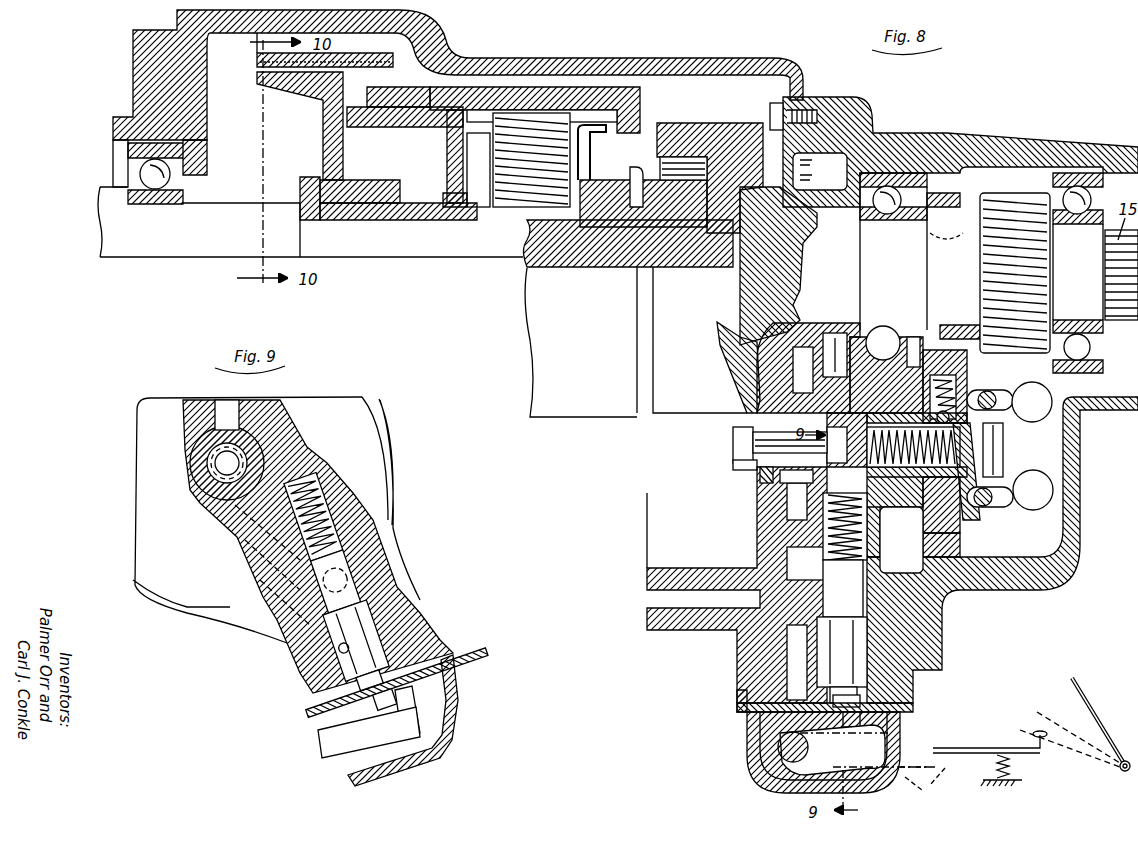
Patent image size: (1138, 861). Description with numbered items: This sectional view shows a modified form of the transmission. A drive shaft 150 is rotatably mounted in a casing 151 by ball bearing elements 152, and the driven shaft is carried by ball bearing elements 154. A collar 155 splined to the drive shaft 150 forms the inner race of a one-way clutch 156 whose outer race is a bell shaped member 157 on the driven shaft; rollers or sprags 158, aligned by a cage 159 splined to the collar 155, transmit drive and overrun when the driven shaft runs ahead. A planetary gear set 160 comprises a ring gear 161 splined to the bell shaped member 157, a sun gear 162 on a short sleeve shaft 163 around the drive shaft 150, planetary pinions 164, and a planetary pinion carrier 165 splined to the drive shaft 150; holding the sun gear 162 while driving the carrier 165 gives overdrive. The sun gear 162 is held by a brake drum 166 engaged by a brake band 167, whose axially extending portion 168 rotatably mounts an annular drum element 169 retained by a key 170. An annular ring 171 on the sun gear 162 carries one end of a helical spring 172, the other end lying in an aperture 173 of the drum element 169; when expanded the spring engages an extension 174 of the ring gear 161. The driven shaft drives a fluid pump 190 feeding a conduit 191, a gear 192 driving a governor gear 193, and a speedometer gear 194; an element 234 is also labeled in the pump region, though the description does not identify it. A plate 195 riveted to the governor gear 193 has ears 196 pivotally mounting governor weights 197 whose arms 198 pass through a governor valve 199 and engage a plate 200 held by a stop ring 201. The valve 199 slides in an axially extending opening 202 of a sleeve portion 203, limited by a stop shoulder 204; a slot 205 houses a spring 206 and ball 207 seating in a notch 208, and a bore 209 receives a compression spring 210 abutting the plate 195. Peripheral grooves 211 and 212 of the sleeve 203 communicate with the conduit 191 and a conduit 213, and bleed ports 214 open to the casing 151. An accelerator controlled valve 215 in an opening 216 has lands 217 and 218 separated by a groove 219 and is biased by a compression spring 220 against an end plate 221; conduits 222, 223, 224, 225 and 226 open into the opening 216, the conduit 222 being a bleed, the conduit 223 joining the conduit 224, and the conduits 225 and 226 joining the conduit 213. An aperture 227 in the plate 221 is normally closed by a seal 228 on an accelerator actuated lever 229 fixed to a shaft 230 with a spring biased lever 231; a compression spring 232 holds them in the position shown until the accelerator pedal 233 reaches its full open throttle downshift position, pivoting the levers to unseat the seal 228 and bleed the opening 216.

In FIG. 8, the drive shaft 150 is at (110, 208).
In FIG. 8, the casing 151 is at (673, 58).
In FIG. 8, the ball bearing elements 152 is at (140, 170).
In FIG. 8, the ball bearing elements 154 is at (890, 185).
In FIG. 8, the collar 155 is at (690, 228).
In FIG. 8, the one-way clutch 156 is at (690, 157).
In FIG. 8, the bell shaped member 157 is at (728, 125).
In FIG. 8, the rollers or sprags 158 is at (660, 165).
In FIG. 8, the cage 159 is at (640, 165).
In FIG. 8, the planetary gear set 160 is at (546, 88).
In FIG. 8, the ring gear 161 is at (585, 110).
In FIG. 8, the sun gear 162 is at (485, 205).
In FIG. 8, the short sleeve shaft 163 is at (450, 208).
In FIG. 8, the planetary pinions 164 is at (540, 108).
In FIG. 8, the planetary pinion carrier 165 is at (597, 228).
In FIG. 8, the brake drum 166 is at (290, 80).
In FIG. 8, the brake band 167 is at (270, 49).
In FIG. 8, the axially extending portion 168 is at (355, 205).
In FIG. 8, the annular drum element 169 is at (376, 58).
In FIG. 8, the key 170 is at (390, 203).
In FIG. 8, the annular ring 171 is at (460, 222).
In FIG. 8, the helical spring 172 is at (455, 110).
In FIG. 8, the aperture 173 is at (347, 120).
In FIG. 8, the extension 174 is at (400, 90).
In FIG. 8, the fluid pump 190 is at (850, 107).
In FIG. 8, the conduit 191 is at (833, 338).
In FIG. 8, the gear 192 is at (960, 205).
In FIG. 8, the governor gear 193 is at (962, 550).
In FIG. 8, the speedometer gear 194 is at (1020, 195).
In FIG. 8, the plate 195 is at (973, 510).
In FIG. 8, the ears 196 is at (988, 391).
In FIG. 8, the governor weights 197 is at (1053, 413).
In FIG. 8, the arms 198 is at (1003, 463).
In FIG. 8, the governor valve 199 is at (730, 437).
In FIG. 9, the governor valve 199 is at (262, 437).
In FIG. 8, the plate 200 is at (1003, 445).
In FIG. 8, the stop ring 201 is at (1031, 414).
In FIG. 8, the axially extending opening 202 is at (742, 463).
In FIG. 8, the sleeve portion 203 is at (901, 540).
In FIG. 8, the stop shoulder 204 is at (883, 343).
In FIG. 8, the slot 205 is at (928, 340).
In FIG. 8, the spring 206 is at (958, 392).
In FIG. 8, the ball 207 is at (1032, 402).
In FIG. 8, the notch 208 is at (1000, 508).
In FIG. 8, the bore 209 is at (913, 447).
In FIG. 8, the compression spring 210 is at (905, 407).
In FIG. 8, the peripheral groove 211 is at (837, 360).
In FIG. 9, the peripheral groove 211 is at (226, 404).
In FIG. 8, the peripheral groove 212 is at (780, 490).
In FIG. 8, the conduit 213 is at (787, 510).
In FIG. 9, the conduit 213 is at (268, 532).
In FIG. 8, the bleed ports 214 is at (760, 478).
In FIG. 8, the accelerator controlled valve 215 is at (910, 605).
In FIG. 9, the accelerator controlled valve 215 is at (400, 590).
In FIG. 8, the opening 216 is at (867, 655).
In FIG. 9, the opening 216 is at (321, 668).
In FIG. 8, the land 217 is at (823, 597).
In FIG. 9, the land 217 is at (386, 556).
In FIG. 8, the land 218 is at (873, 690).
In FIG. 9, the land 218 is at (339, 697).
In FIG. 8, the groove 219 is at (867, 632).
In FIG. 9, the groove 219 is at (411, 611).
In FIG. 8, the compression spring 220 is at (866, 555).
In FIG. 9, the compression spring 220 is at (334, 492).
In FIG. 8, the end plate 221 is at (740, 707).
In FIG. 9, the end plate 221 is at (120, 226).
In FIG. 8, the bleed conduit 222 is at (901, 536).
In FIG. 8, the conduit 223 is at (810, 555).
In FIG. 9, the conduit 223 is at (352, 527).
In FIG. 8, the conduit 224 is at (660, 597).
In FIG. 9, the conduit 224 is at (393, 555).
In FIG. 8, the conduit 225 is at (807, 637).
In FIG. 9, the conduit 225 is at (327, 604).
In FIG. 8, the conduit 226 is at (787, 680).
In FIG. 9, the conduit 226 is at (415, 625).
In FIG. 8, the aperture 227 is at (870, 703).
In FIG. 9, the aperture 227 is at (410, 642).
In FIG. 8, the seal 228 is at (843, 720).
In FIG. 9, the seal 228 is at (363, 717).
In FIG. 8, the accelerator actuated lever 229 is at (808, 757).
In FIG. 9, the accelerator actuated lever 229 is at (412, 748).
In FIG. 8, the shaft 230 is at (777, 748).
In FIG. 9, the shaft 230 is at (320, 742).
In FIG. 8, the spring biased accelerator actuated lever 231 is at (973, 765).
In FIG. 8, the compression spring 232 is at (1012, 766).
In FIG. 8, the accelerator pedal 233 is at (1100, 712).
In FIG. 8, the bolt 234 is at (822, 138).